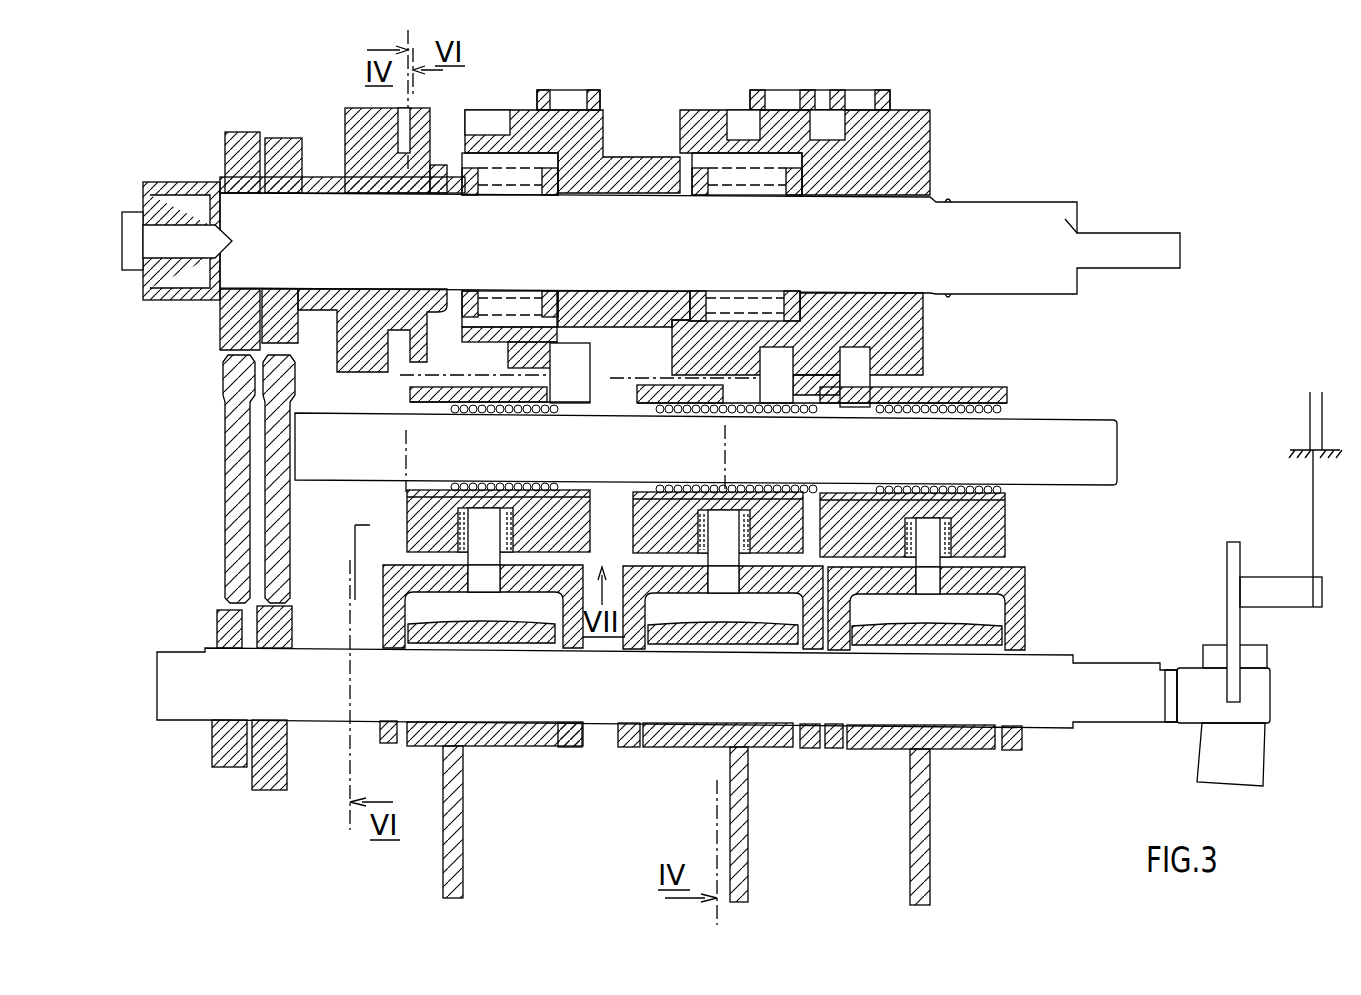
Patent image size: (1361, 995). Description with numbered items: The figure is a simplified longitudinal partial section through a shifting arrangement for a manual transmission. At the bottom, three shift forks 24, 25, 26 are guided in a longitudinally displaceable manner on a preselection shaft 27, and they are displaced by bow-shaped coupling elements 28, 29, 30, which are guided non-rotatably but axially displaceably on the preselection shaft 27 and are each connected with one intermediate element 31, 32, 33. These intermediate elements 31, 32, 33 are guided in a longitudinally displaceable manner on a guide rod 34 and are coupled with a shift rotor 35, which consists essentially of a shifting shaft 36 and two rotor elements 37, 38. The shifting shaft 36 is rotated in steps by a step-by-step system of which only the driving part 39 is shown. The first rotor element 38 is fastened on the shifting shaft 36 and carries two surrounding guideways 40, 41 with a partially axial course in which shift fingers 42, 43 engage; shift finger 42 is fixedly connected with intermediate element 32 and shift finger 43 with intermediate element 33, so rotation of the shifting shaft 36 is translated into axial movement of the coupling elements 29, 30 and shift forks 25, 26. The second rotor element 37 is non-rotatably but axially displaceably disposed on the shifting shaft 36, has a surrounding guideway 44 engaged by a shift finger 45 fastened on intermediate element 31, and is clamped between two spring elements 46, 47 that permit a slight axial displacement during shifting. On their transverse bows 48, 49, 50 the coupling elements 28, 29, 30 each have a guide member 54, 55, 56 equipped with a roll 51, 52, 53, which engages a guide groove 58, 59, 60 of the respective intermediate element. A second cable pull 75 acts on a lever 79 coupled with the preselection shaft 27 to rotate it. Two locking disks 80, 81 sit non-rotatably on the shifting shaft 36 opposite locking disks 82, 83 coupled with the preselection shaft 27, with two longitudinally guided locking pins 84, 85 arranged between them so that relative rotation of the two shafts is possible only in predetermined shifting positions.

The shift fork 24 is at (463, 823).
The shift fork 25 is at (748, 832).
The shift fork 26 is at (930, 835).
The preselection shaft 27 is at (175, 700).
The bow-shaped coupling element 28 is at (388, 743).
The bow-shaped coupling element 29 is at (628, 747).
The bow-shaped coupling element 30 is at (832, 748).
The intermediate element 31 is at (472, 537).
The intermediate element 32 is at (702, 542).
The intermediate element 33 is at (939, 542).
The guide rod 34 is at (1100, 437).
The shift rotor 35 is at (613, 270).
The shifting shaft 36 is at (1070, 208).
The second rotor element 37 is at (577, 188).
The first rotor element 38 is at (823, 220).
The driving part 39 is at (390, 135).
The surrounding guideway 40 is at (740, 110).
The surrounding guideway 41 is at (828, 110).
The shift finger 42 is at (765, 368).
The shift finger 43 is at (862, 370).
The surrounding guideway 44 is at (487, 118).
The shift finger 45 is at (590, 365).
The spring element 46 is at (538, 200).
The spring element 47 is at (710, 200).
The transverse bow 48 is at (483, 606).
The transverse bow 49 is at (723, 607).
The transverse bow 50 is at (926, 608).
The roll 51 is at (512, 528).
The roll 52 is at (750, 540).
The roll 53 is at (1005, 545).
The guide member 54 is at (495, 598).
The guide member 55 is at (730, 598).
The guide member 56 is at (935, 585).
The guide groove 58 is at (460, 530).
The guide groove 59 is at (700, 538).
The guide groove 60 is at (898, 535).
The second cable pull 75 is at (1308, 424).
The lever 79 is at (1270, 577).
The locking disk 80 is at (240, 132).
The locking disk 81 is at (282, 138).
The locking disk 82 is at (228, 755).
The locking disk 83 is at (272, 775).
The locking pin 84 is at (225, 517).
The locking pin 85 is at (290, 517).